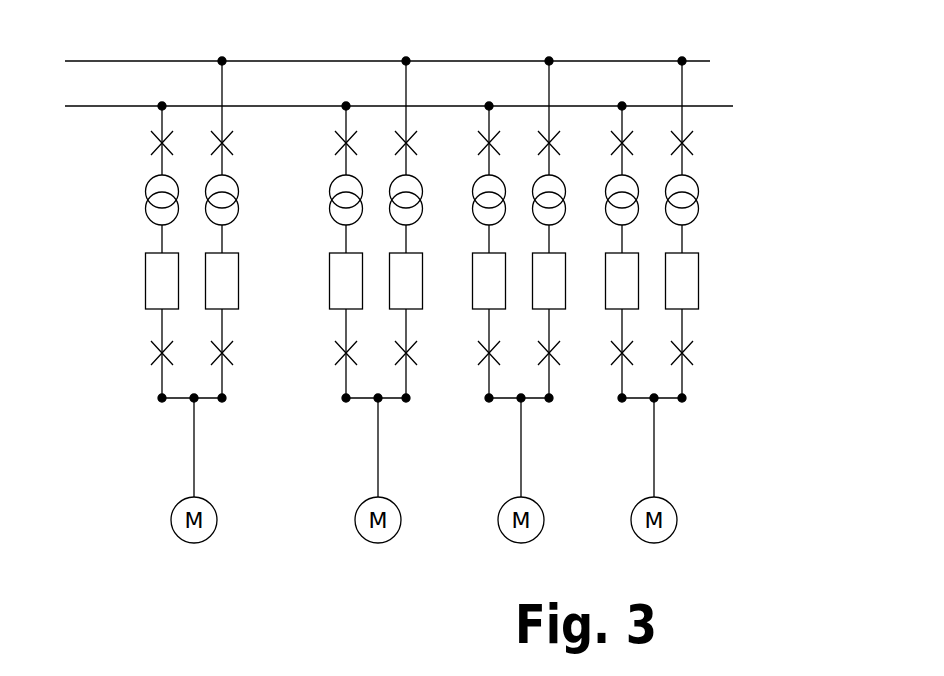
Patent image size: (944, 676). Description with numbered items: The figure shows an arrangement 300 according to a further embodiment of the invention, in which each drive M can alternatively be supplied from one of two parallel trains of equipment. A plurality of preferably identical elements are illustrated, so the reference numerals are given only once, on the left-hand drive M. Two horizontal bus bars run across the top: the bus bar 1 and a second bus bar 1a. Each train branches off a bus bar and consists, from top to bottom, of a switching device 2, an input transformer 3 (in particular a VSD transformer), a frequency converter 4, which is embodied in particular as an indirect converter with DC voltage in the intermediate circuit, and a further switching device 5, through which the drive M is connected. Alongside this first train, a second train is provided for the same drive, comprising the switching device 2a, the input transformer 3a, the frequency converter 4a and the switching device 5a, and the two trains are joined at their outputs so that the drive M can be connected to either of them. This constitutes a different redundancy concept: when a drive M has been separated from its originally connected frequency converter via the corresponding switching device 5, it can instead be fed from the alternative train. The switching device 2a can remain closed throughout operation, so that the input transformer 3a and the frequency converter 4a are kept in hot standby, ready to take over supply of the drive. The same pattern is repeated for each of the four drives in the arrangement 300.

The bus bar 1a is at (110, 61).
The bus bar 1 is at (110, 106).
The switching device 2 is at (130, 145).
The switching device 2a is at (250, 138).
The input transformer 3 is at (130, 203).
The input transformer 3a is at (250, 197).
The frequency converter 4 is at (130, 277).
The frequency converter 4a is at (250, 272).
The switching device 5 is at (130, 358).
The switching device 5a is at (250, 350).
The arrangement 300 is at (753, 165).